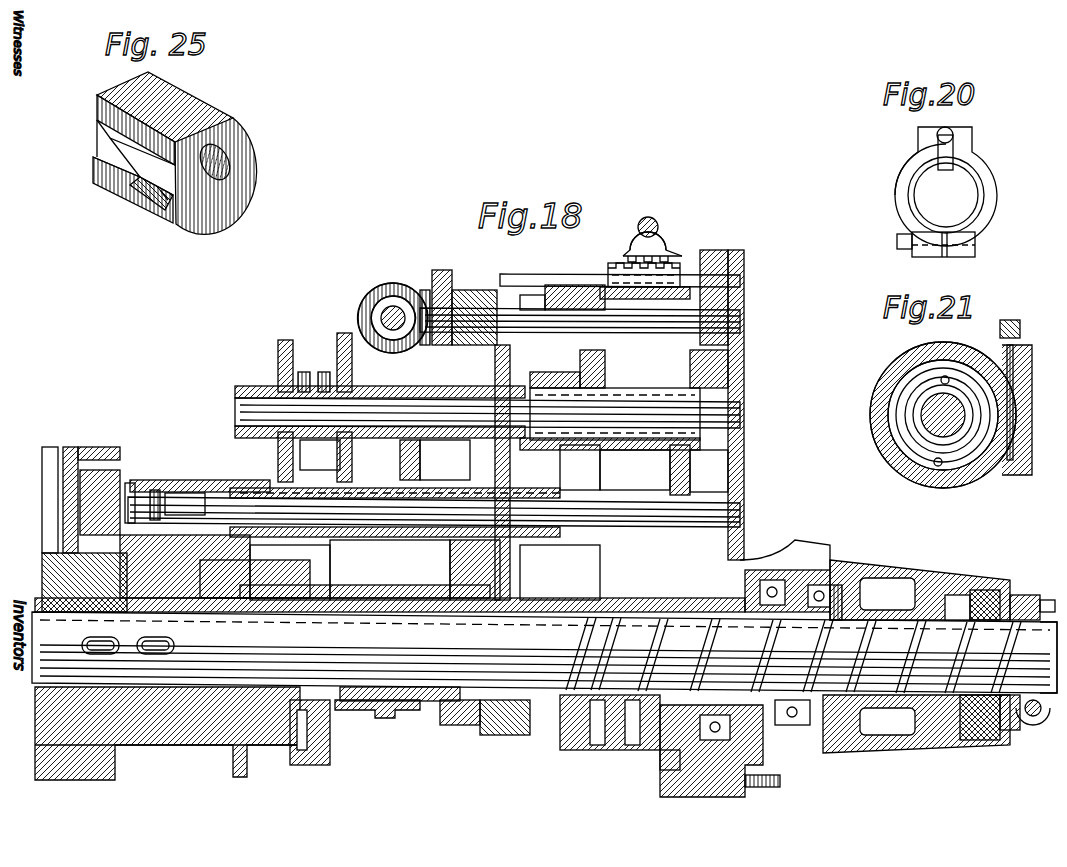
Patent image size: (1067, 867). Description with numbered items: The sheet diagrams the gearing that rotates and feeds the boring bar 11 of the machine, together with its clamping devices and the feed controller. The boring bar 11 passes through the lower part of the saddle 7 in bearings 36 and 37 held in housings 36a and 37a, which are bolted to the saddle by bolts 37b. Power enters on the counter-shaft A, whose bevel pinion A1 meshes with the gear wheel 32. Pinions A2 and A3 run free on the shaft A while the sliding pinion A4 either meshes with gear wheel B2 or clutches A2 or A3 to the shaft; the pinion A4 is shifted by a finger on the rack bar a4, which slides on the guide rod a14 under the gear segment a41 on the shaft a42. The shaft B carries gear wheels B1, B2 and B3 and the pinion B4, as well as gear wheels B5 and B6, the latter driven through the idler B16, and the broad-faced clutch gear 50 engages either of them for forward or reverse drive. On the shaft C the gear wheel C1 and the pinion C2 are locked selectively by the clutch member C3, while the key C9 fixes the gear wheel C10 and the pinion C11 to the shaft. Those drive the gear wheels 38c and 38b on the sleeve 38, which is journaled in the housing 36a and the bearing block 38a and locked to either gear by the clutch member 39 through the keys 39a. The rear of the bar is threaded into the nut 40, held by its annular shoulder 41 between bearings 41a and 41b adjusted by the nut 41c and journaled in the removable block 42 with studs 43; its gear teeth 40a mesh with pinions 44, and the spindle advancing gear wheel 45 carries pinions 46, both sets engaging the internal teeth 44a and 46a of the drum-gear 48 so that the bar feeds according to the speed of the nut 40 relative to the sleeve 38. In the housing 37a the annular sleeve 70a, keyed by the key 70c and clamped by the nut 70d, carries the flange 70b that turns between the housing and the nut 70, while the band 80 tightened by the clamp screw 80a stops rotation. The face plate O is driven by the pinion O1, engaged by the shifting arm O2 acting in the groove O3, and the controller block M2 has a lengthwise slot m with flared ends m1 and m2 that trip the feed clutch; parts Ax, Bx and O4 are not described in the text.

In FIG. 25, the controller block M2 is at (186, 107).
In FIG. 25, the flared slot end m2 is at (110, 138).
In FIG. 25, the lengthwise slot m is at (157, 168).
In FIG. 25, the flared slot end m1 is at (172, 190).
In FIG. 20, the annular sleeve 70a is at (965, 145).
In FIG. 21, the annular sleeve 70a is at (928, 475).
In FIG. 18, the annular sleeve 70a is at (1025, 605).
In FIG. 20, the key 70c is at (952, 167).
In FIG. 18, the key 70c is at (1043, 628).
In FIG. 20, the boring bar 11 is at (958, 206).
In FIG. 21, the boring bar 11 is at (905, 447).
In FIG. 18, the boring bar 11 is at (78, 650).
In FIG. 20, the clamping nut 70d is at (903, 244).
In FIG. 18, the clamping nut 70d is at (1033, 718).
In FIG. 21, the clamping band 80 is at (885, 390).
In FIG. 18, the clamping band 80 is at (988, 592).
In FIG. 21, the clamp screw 80a is at (1014, 330).
In FIG. 21, the flange 70b is at (912, 458).
In FIG. 18, the flange 70b is at (962, 595).
In FIG. 18, the nut 70 is at (1000, 740).
In FIG. 18, the gear wheel 32 is at (388, 285).
In FIG. 18, the counter-shaft A is at (580, 320).
In FIG. 18, the bevel pinion A1 is at (425, 290).
In FIG. 18, the bearing block Ax is at (445, 280).
In FIG. 18, the guide rod a14 is at (540, 278).
In FIG. 18, the sliding pinion A4 is at (588, 300).
In FIG. 18, the pinion A2 is at (530, 312).
In FIG. 18, the rack bar a4 is at (645, 281).
In FIG. 18, the shaft a42 is at (656, 222).
In FIG. 18, the gear segment a41 is at (666, 246).
In FIG. 18, the pinion A3 is at (685, 305).
In FIG. 18, the shaft B is at (487, 412).
In FIG. 18, the gear wheel B1 is at (533, 380).
In FIG. 18, the gear wheel B2 is at (598, 363).
In FIG. 18, the gear wheel B3 is at (709, 369).
In FIG. 18, the pinion B4 is at (582, 413).
In FIG. 18, the gear wheel B5 is at (343, 334).
In FIG. 18, the gear wheel B6 is at (287, 342).
In FIG. 18, the intermediate idler B16 is at (320, 456).
In FIG. 18, the gear Bx is at (435, 460).
In FIG. 18, the broad-faced clutch gear 50 is at (317, 372).
In FIG. 18, the shaft C is at (434, 512).
In FIG. 18, the gear wheel C1 is at (547, 472).
In FIG. 18, the pinion C2 is at (709, 471).
In FIG. 18, the clutch member C3 is at (645, 470).
In FIG. 18, the key C9 is at (395, 512).
In FIG. 18, the gear wheel C10 is at (460, 548).
In FIG. 18, the pinion C11 is at (342, 546).
In FIG. 18, the face plate O is at (57, 508).
In FIG. 18, the pinion O1 is at (177, 495).
In FIG. 18, the shifting arm O2 is at (101, 455).
In FIG. 18, the groove O3 is at (156, 490).
In FIG. 18, the ring O4 is at (127, 475).
In FIG. 18, the saddle 7 is at (735, 478).
In FIG. 18, the bearing 36 is at (218, 688).
In FIG. 18, the bearing housing 36a is at (210, 600).
In FIG. 18, the bearing 37 is at (793, 655).
In FIG. 18, the bearing housing 37a is at (893, 578).
In FIG. 18, the bolts 37b is at (765, 776).
In FIG. 18, the sleeve 38 is at (325, 614).
In FIG. 18, the bearing block 38a is at (502, 737).
In FIG. 18, the gear wheel 38b is at (312, 760).
In FIG. 18, the gear wheel 38c is at (452, 727).
In FIG. 18, the clutch member 39 is at (375, 712).
In FIG. 18, the keys 39a is at (390, 614).
In FIG. 18, the nut 40 is at (752, 614).
In FIG. 18, the gear teeth 40a is at (640, 700).
In FIG. 18, the annular shoulder 41 is at (790, 575).
In FIG. 18, the bearing 41a is at (775, 560).
In FIG. 18, the bearing 41b is at (818, 582).
In FIG. 18, the nut 41c is at (838, 590).
In FIG. 18, the removable block 42 is at (680, 750).
In FIG. 18, the studs 43 is at (698, 612).
In FIG. 18, the pinions 44 is at (650, 610).
In FIG. 18, the internal teeth 44a is at (726, 739).
In FIG. 18, the spindle advancing gear wheel 45 is at (568, 745).
In FIG. 18, the pinions 46 is at (590, 618).
In FIG. 18, the internal teeth 46a is at (583, 750).
In FIG. 18, the drum-gear 48 is at (640, 747).